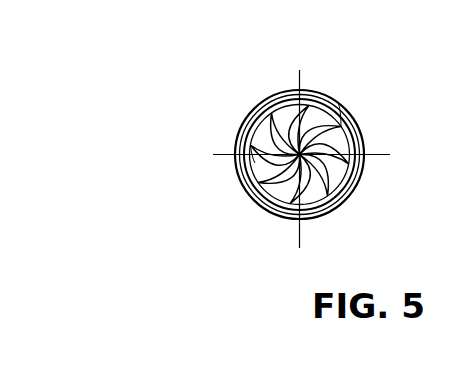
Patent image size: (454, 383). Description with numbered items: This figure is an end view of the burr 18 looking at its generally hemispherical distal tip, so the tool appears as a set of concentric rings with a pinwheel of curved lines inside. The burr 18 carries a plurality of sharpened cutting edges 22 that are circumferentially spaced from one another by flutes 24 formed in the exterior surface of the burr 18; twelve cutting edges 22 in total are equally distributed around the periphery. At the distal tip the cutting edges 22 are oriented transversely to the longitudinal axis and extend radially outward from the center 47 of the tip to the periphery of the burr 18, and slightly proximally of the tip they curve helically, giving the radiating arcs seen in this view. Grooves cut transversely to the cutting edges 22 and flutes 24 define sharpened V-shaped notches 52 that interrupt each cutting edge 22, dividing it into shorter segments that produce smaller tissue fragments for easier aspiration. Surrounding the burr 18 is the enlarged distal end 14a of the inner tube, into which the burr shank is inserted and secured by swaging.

The distal end of inner tube 14a is at (348, 193).
The burr 18 is at (278, 216).
The center of distal tip 47 is at (258, 183).
The V-shaped notches 52 is at (283, 107).
The cutting edges 22 is at (313, 107).
The flutes 24 is at (338, 102).